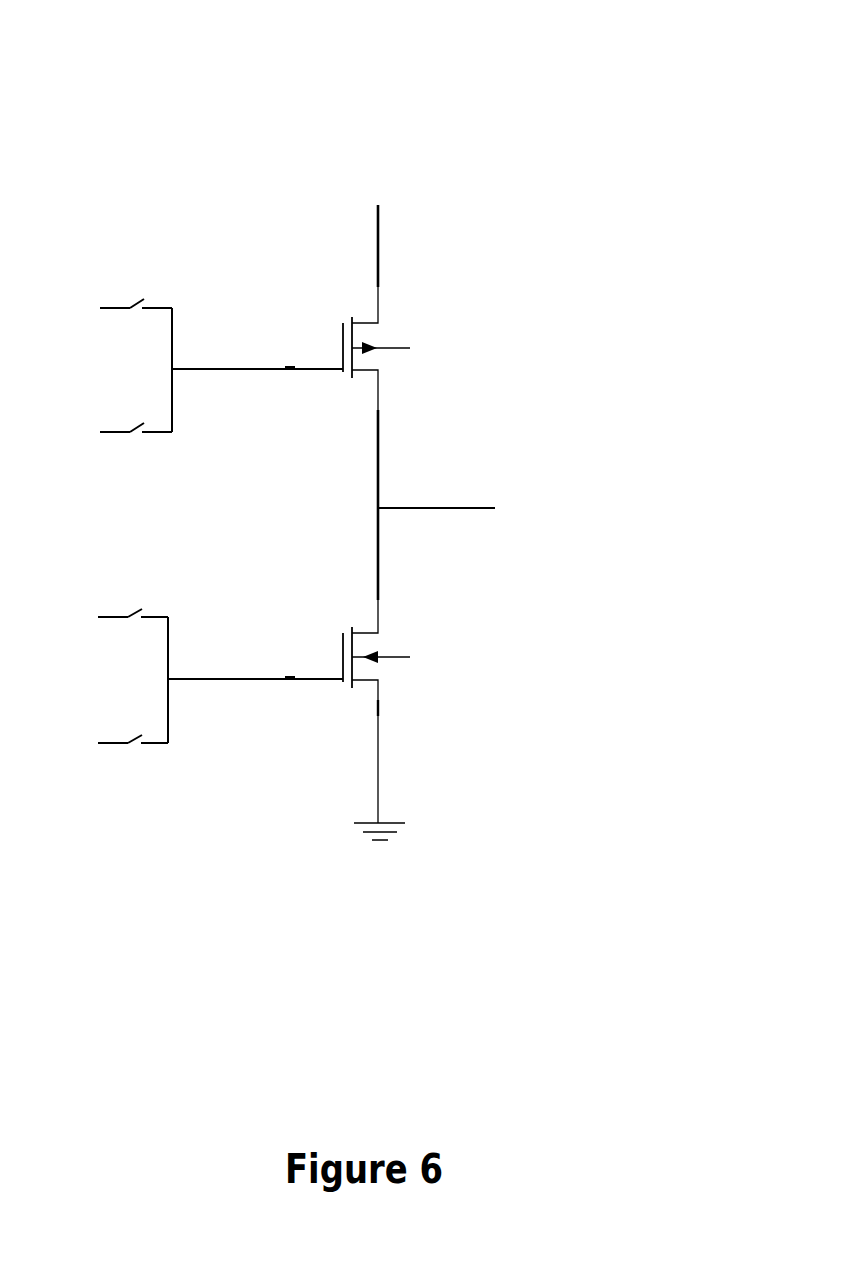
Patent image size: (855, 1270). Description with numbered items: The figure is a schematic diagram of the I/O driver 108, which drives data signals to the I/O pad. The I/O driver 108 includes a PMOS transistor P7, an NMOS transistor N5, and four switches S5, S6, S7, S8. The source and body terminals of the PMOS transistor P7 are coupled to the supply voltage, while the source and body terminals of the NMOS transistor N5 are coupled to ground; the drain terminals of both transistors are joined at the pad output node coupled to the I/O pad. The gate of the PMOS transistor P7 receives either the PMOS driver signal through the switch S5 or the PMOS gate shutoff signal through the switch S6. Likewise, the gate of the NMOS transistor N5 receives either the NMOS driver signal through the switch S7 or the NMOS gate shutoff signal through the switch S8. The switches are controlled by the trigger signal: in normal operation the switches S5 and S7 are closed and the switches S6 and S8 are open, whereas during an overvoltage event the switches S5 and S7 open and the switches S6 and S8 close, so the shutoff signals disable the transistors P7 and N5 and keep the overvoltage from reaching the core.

The I/O driver 108 is at (448, 81).
The PMOS transistor P7 is at (360, 357).
The NMOS transistor N5 is at (356, 711).
The switch S5 is at (136, 445).
The switch S6 is at (136, 290).
The switch S7 is at (133, 756).
The switch S8 is at (133, 599).